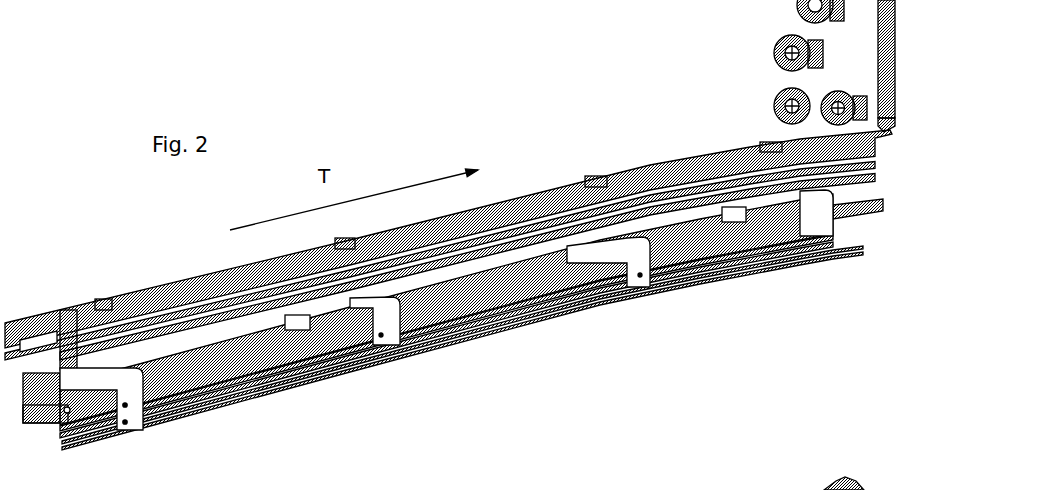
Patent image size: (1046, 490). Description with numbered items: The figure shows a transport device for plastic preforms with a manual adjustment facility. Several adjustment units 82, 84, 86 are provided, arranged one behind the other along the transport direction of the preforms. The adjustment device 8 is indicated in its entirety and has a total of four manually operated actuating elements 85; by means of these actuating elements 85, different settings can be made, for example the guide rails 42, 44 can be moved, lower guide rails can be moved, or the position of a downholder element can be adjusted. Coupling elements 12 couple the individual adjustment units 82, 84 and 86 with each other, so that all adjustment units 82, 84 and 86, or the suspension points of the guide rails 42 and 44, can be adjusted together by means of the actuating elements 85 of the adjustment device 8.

The adjustment device 8 is at (758, 67).
The actuating elements 85 is at (777, 110).
The coupling elements 12 is at (258, 398).
The guide rail 42 is at (60, 410).
The guide rail 44 is at (72, 410).
The adjustment unit 82 is at (133, 398).
The adjustment unit 84 is at (388, 323).
The adjustment unit 86 is at (637, 278).